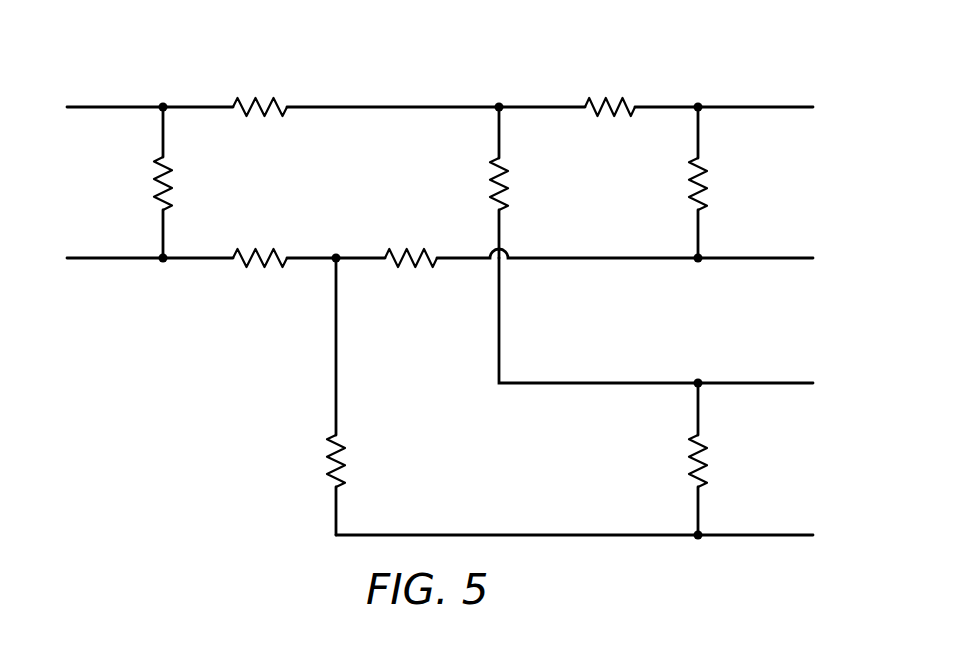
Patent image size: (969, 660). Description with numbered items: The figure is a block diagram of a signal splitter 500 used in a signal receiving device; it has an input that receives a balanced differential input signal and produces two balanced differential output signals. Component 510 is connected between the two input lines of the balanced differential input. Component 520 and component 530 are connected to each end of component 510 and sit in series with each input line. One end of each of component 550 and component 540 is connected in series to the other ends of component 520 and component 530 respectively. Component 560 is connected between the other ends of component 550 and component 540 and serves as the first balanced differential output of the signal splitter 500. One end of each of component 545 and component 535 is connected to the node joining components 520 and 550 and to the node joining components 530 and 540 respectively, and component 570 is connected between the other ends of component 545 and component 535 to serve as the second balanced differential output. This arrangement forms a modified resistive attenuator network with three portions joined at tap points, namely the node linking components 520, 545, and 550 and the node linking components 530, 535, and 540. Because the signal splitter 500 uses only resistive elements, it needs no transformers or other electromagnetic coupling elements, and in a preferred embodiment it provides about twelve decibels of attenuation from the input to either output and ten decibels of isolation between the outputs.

The signal splitter 500 is at (182, 373).
The component 510 is at (157, 183).
The component 520 is at (259, 96).
The component 530 is at (259, 247).
The component 535 is at (329, 463).
The component 540 is at (411, 247).
The component 545 is at (509, 182).
The component 550 is at (609, 96).
The component 560 is at (708, 182).
The component 570 is at (691, 463).